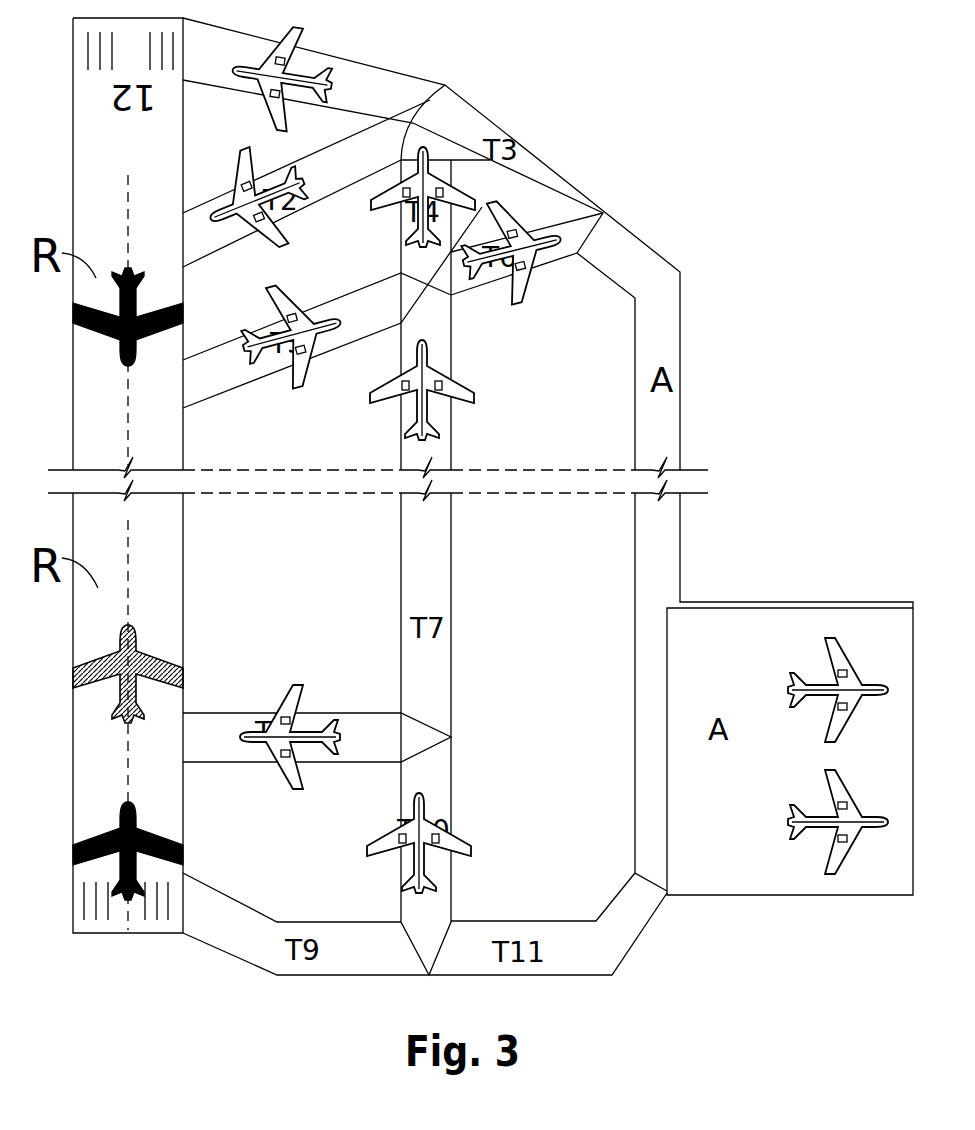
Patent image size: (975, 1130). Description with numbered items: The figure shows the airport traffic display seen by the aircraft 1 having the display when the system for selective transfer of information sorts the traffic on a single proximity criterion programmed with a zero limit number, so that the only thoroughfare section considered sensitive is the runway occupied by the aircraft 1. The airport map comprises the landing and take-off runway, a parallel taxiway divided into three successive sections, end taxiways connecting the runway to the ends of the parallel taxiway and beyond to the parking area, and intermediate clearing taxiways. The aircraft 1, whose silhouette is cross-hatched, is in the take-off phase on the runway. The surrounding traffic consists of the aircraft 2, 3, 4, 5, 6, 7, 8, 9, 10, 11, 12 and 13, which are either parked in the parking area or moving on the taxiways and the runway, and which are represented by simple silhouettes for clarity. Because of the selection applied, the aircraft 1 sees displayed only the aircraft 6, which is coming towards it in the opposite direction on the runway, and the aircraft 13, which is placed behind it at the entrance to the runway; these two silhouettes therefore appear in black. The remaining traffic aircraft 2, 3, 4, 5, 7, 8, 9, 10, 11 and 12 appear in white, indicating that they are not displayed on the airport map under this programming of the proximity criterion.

The aircraft having the display 1 is at (93, 662).
The aircraft 2 is at (298, 76).
The aircraft 3 is at (240, 187).
The aircraft 4 is at (408, 200).
The aircraft 5 is at (523, 265).
The aircraft 6 is at (115, 335).
The aircraft 7 is at (305, 347).
The aircraft 8 is at (465, 397).
The aircraft 9 is at (837, 690).
The aircraft 10 is at (297, 718).
The aircraft 11 is at (837, 810).
The aircraft 12 is at (460, 840).
The aircraft 13 is at (100, 848).